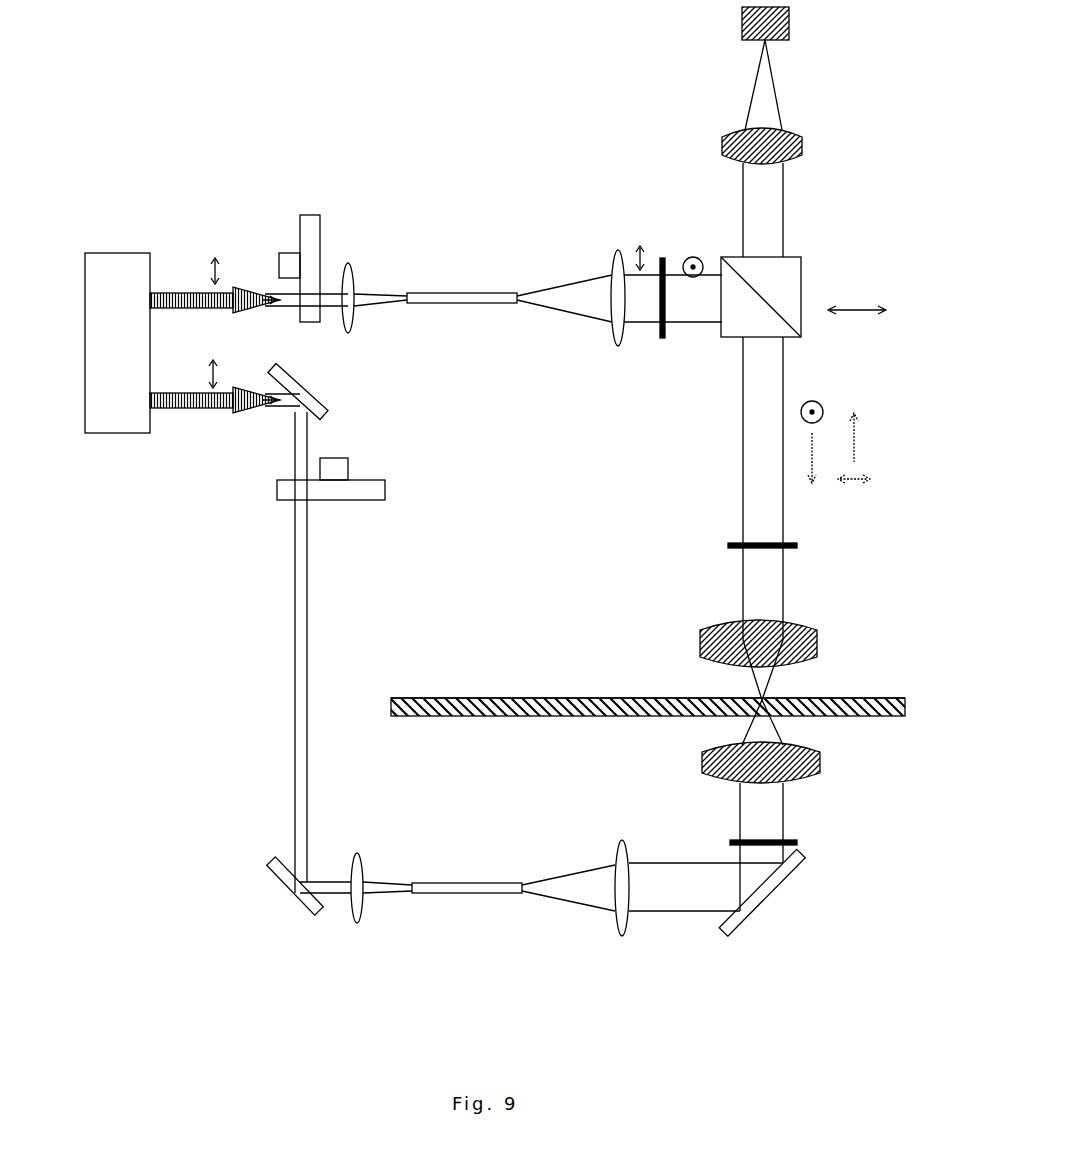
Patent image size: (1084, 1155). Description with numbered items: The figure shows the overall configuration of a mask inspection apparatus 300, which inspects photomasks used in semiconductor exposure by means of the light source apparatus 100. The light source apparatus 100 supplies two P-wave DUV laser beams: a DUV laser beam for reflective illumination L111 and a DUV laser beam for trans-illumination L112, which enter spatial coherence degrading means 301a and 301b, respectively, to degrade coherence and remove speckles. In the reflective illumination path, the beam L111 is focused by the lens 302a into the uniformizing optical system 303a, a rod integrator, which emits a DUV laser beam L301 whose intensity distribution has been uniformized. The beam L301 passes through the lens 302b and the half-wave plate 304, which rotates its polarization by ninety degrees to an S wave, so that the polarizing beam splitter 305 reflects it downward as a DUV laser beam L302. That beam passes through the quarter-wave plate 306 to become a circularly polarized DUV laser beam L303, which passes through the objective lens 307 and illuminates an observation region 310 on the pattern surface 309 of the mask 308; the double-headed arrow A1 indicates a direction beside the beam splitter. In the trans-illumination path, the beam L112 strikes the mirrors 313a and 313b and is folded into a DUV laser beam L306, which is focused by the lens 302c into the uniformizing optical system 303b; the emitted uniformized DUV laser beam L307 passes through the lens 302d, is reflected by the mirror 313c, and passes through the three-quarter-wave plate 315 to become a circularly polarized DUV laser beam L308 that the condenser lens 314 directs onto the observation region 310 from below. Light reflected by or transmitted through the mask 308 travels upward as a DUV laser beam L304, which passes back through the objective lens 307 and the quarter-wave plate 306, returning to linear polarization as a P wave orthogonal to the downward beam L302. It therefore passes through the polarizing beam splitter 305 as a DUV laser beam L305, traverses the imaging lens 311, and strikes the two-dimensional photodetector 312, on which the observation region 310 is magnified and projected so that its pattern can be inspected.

The light source apparatus 100 is at (133, 252).
The DUV laser beam for reflective illumination L111 is at (181, 291).
The DUV laser beam for trans-illumination L112 is at (180, 390).
The spatial coherence degrading means 301a is at (320, 218).
The spatial coherence degrading means 301b is at (373, 492).
The lens 302a is at (352, 273).
The lens 302b is at (618, 250).
The lens 302c is at (358, 853).
The lens 302d is at (622, 840).
The uniformizing optical system 303a is at (463, 293).
The uniformizing optical system 303b is at (463, 883).
The DUV laser beam L301 is at (577, 293).
The λ/2 wave plate 304 is at (657, 338).
The polarizing beam splitter 305 is at (792, 273).
The DUV laser beam L302 is at (757, 428).
The λ/4 wave plate 306 is at (728, 545).
The DUV laser beam L303 is at (752, 595).
The objective lens 307 is at (700, 640).
The DUV laser beam L304 is at (765, 673).
The mask 308 is at (410, 698).
The pattern surface 309 is at (448, 698).
The observation region 310 is at (758, 697).
The imaging lens 311 is at (802, 143).
The two-dimensional photodetector 312 is at (790, 15).
The DUV laser beam L305 is at (775, 213).
The optical axis direction A1 is at (857, 330).
The mirror 313a is at (313, 390).
The mirror 313b is at (285, 878).
The mirror 313c is at (770, 900).
The condenser lens 314 is at (820, 755).
The DUV laser beam L308 is at (750, 817).
The 3λ/4 wave plate 315 is at (797, 840).
The DUV laser beam L306 is at (333, 887).
The DUV laser beam L307 is at (575, 888).
The mask inspection apparatus 300 is at (857, 1036).